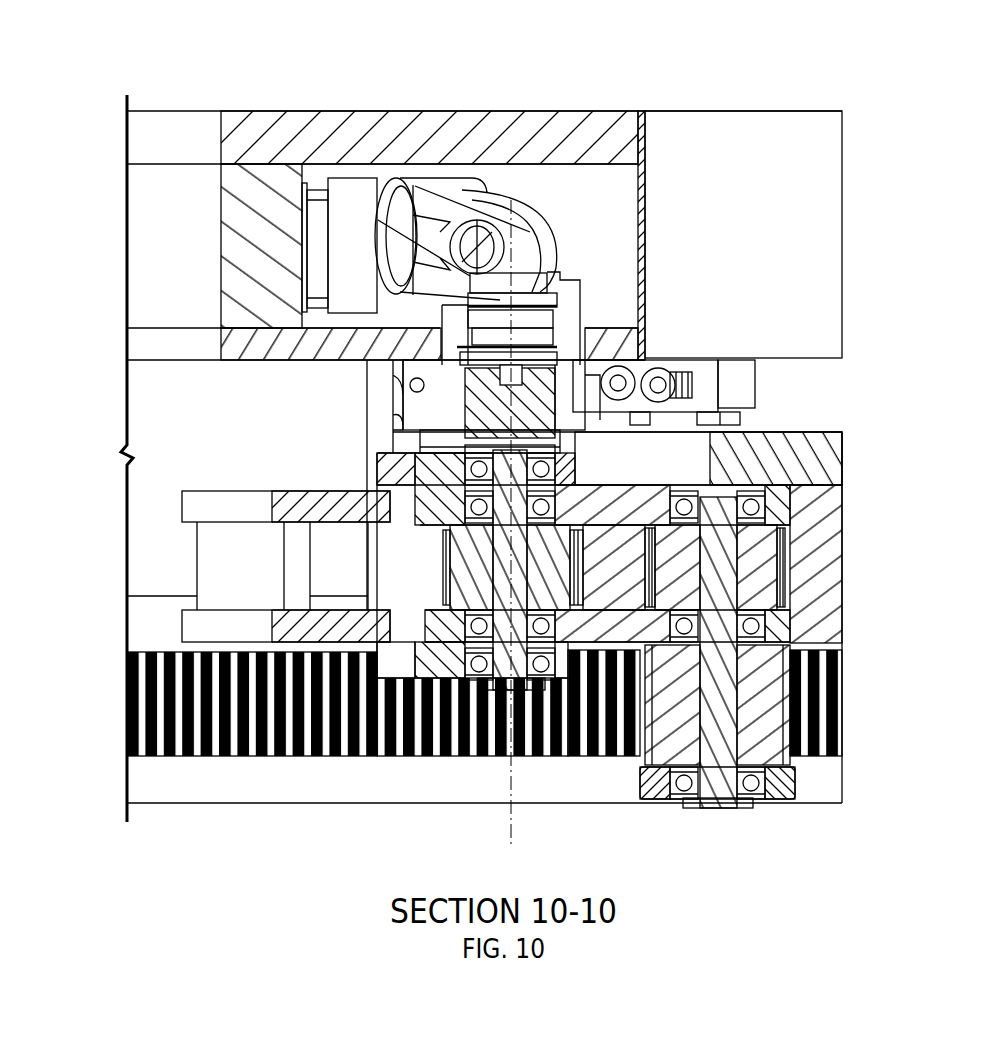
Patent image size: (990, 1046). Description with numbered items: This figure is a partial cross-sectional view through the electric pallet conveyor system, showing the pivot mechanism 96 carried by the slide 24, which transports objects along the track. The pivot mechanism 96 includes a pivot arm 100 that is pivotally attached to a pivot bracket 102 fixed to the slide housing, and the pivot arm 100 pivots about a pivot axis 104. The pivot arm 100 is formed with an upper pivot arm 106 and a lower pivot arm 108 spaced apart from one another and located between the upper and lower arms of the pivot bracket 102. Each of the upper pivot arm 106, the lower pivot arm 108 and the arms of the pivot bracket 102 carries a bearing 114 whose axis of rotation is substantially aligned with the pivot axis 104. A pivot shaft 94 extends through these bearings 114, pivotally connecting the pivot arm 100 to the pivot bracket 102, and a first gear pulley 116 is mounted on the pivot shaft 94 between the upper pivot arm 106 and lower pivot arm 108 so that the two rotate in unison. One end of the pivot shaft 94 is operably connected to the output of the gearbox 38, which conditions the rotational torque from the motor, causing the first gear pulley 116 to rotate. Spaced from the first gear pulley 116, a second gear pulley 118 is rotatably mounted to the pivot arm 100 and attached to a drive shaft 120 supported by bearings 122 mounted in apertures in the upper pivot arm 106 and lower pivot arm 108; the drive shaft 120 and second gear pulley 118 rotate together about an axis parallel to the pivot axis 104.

The slide 24 is at (842, 203).
The gearbox 38 is at (512, 228).
The pivot shaft 94 is at (495, 534).
The pivot mechanism 96 is at (787, 572).
The pivot arm 100 is at (230, 490).
The pivot bracket 102 is at (430, 462).
The pivot axis 104 is at (502, 818).
The upper pivot arm 106 is at (765, 520).
The lower pivot arm 108 is at (788, 635).
The bearing 114 is at (575, 437).
The first gear pulley 116 is at (565, 523).
The second gear pulley 118 is at (783, 543).
The drive shaft 120 is at (745, 805).
The bearings 122 is at (752, 630).